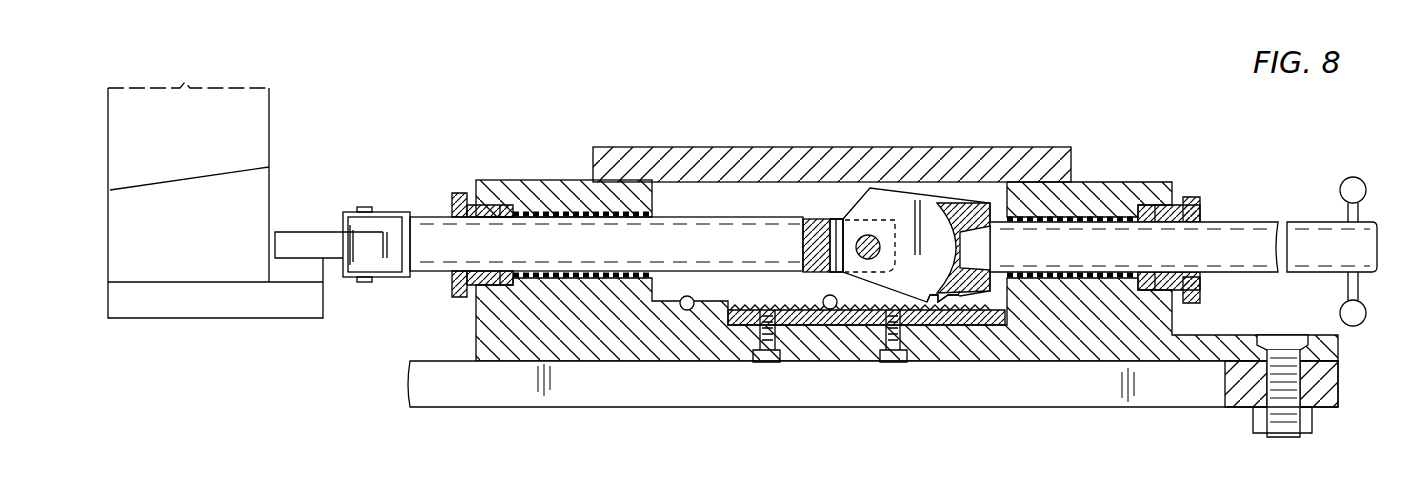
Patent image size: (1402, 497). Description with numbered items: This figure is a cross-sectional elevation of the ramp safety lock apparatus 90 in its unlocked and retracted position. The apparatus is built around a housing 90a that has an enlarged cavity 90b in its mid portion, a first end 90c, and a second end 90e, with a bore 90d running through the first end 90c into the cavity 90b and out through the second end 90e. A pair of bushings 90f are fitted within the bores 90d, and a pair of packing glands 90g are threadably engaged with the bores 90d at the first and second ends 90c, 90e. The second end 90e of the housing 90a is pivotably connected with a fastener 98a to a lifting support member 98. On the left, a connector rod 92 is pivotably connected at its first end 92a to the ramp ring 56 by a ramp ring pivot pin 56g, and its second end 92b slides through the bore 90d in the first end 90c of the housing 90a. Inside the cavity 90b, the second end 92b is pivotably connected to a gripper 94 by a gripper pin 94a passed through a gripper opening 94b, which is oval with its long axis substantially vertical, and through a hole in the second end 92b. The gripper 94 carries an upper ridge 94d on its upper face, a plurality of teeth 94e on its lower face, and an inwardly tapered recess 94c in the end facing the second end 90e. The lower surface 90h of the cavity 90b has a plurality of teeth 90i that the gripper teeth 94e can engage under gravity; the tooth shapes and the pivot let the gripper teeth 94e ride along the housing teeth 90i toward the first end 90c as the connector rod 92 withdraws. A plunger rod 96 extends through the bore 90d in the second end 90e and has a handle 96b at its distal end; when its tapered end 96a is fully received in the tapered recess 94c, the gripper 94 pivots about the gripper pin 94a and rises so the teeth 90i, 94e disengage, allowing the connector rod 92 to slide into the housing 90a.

The ramp ring 56 is at (182, 305).
The ramp ring pivot pin 56g is at (364, 284).
The ramp safety lock apparatus 90 is at (1058, 100).
The housing 90a is at (520, 180).
The enlarged cavity 90b is at (673, 195).
The first end 90c is at (490, 180).
The bore 90d is at (593, 217).
The second end 90e is at (1160, 183).
The bushings 90f is at (558, 275).
The packing glands 90g is at (452, 193).
The lower surface 90h is at (693, 300).
The teeth 90i is at (827, 300).
The connector rod 92 is at (696, 252).
The first end 92a is at (383, 212).
The second end 92b is at (835, 220).
The gripper 94 is at (927, 207).
The gripper pin 94a is at (917, 222).
The gripper opening 94b is at (842, 222).
The inwardly tapered recess 94c is at (990, 222).
The upper ridge 94d is at (874, 186).
The teeth 94e is at (945, 305).
The plunger rod 96 is at (1212, 245).
The tapered end 96a is at (980, 280).
The handle 96b is at (1353, 178).
The lifting support member 98 is at (1340, 397).
The fastener 98a is at (1281, 335).